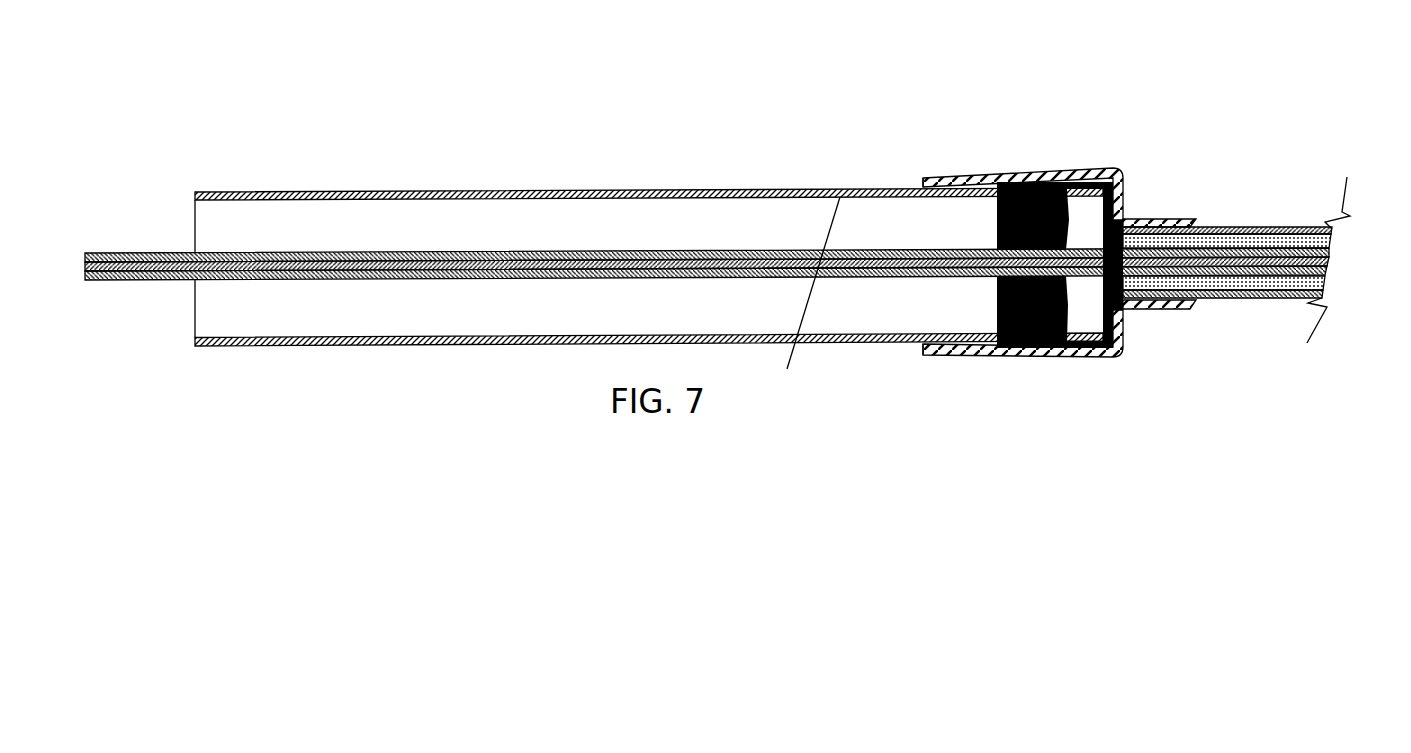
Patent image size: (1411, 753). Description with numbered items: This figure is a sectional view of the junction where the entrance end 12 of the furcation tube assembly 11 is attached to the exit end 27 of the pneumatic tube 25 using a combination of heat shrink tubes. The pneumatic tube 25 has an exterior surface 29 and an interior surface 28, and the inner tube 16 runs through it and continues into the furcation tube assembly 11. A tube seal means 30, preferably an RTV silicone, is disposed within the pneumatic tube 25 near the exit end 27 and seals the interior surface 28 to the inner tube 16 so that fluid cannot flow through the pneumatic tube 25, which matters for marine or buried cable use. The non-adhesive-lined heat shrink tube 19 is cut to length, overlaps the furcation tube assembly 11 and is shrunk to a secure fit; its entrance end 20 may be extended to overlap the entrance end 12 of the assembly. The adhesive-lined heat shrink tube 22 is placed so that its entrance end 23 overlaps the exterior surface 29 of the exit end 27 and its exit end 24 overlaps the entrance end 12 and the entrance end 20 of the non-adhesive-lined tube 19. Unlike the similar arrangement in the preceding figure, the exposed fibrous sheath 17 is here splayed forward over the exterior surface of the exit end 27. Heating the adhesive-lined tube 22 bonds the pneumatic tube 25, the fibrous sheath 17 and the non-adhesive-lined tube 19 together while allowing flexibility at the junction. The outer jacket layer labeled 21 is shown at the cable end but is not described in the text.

The furcation tube assembly 11 is at (1275, 92).
The entrance end of the furcation tube assembly 12 is at (1150, 309).
The inner tube 16 is at (120, 253).
The exposed fibrous sheath 17 is at (1097, 357).
The non-adhesive-lined heat shrink tube 19 is at (1233, 228).
The entrance end of the non-adhesive-lined heat shrink tube 20 is at (1123, 218).
The cable sheath 21 is at (1302, 229).
The adhesive-lined heat shrink tube 22 is at (983, 176).
The entrance end of the adhesive-lined heat shrink tube 23 is at (923, 178).
The exit end of the adhesive-lined heat shrink tube 24 is at (1192, 219).
The pneumatic tube 25 is at (415, 192).
The exit end of the pneumatic tube 27 is at (1113, 177).
The interior surface of the pneumatic tube 28 is at (787, 369).
The exterior surface of the pneumatic tube 29 is at (873, 340).
The tube seal means 30 is at (1067, 177).